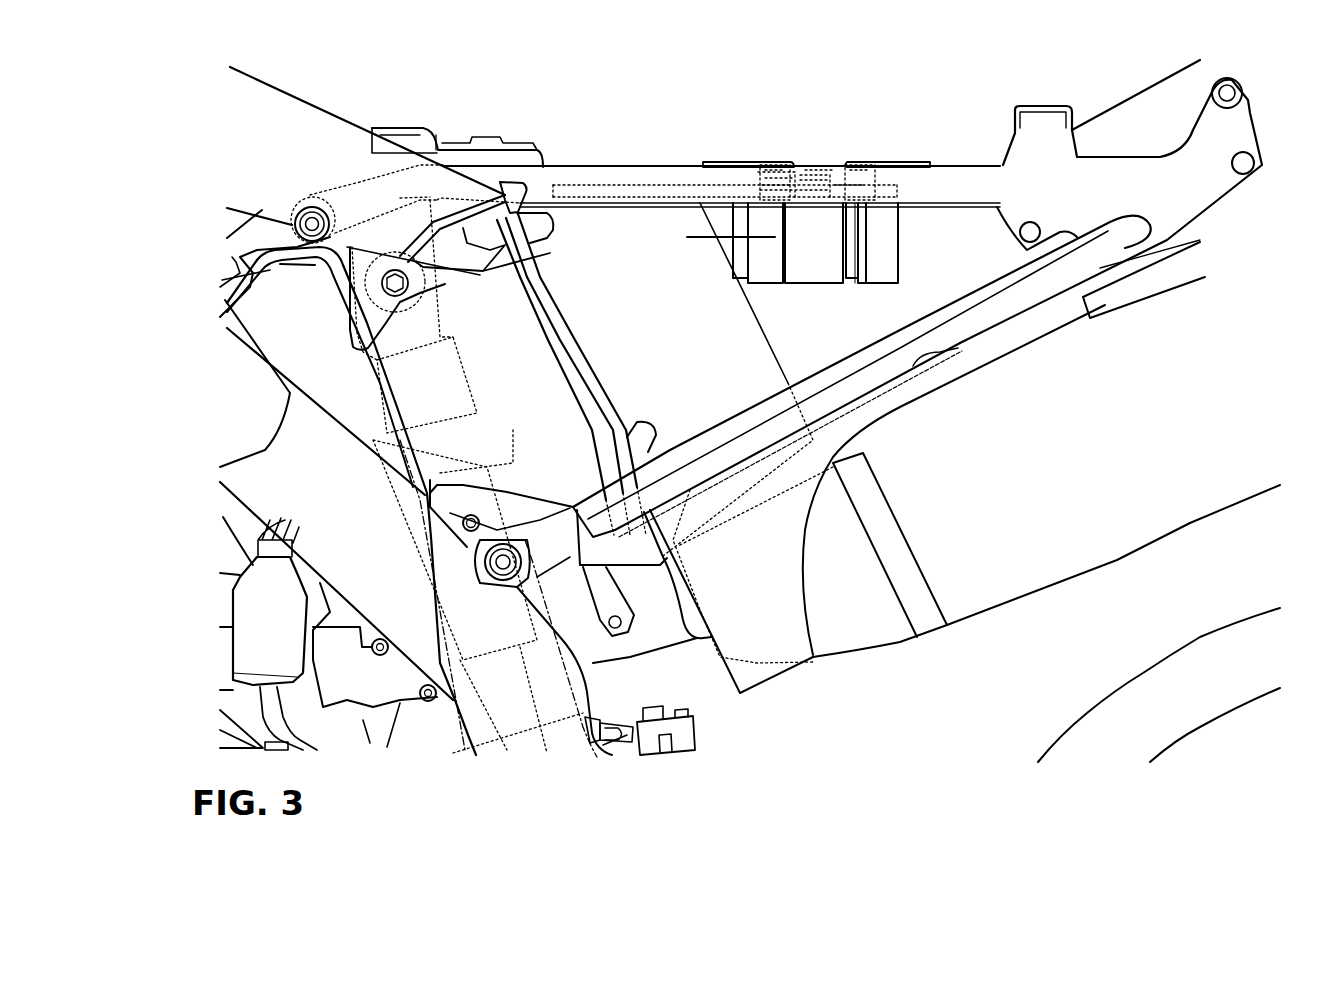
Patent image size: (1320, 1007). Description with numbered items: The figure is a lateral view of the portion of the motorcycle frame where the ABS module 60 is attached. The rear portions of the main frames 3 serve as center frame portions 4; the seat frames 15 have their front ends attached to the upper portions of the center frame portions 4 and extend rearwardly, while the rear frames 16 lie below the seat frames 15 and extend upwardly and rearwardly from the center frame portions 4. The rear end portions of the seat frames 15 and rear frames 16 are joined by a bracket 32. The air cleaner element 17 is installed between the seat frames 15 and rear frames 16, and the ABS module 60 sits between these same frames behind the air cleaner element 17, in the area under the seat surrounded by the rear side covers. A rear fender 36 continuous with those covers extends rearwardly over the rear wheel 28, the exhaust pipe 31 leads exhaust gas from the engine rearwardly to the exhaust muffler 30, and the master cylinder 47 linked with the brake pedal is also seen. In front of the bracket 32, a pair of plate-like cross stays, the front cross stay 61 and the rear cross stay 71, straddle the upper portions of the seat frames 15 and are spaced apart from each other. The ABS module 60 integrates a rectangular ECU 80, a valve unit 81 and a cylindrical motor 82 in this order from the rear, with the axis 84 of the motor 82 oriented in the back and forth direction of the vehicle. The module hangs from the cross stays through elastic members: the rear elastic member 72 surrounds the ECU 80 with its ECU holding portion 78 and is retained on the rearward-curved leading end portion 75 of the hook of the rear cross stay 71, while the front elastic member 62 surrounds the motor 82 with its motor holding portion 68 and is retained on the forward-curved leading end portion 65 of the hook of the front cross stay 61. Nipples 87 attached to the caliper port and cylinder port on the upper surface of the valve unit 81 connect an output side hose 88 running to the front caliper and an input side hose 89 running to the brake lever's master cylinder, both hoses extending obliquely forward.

The main frame 3 is at (265, 675).
The center frame portion 4 is at (328, 615).
The seat frame 15 is at (960, 173).
The rear frame 16 is at (867, 378).
The air cleaner element 17 is at (650, 343).
The rear wheel 28 is at (1140, 680).
The exhaust muffler 30 is at (1187, 520).
The exhaust pipe 31 is at (667, 633).
The bracket 32 is at (1143, 160).
The rear fender 36 is at (787, 575).
The master cylinder 47 is at (697, 725).
The ABS module 60 is at (820, 205).
The front cross stay 61 is at (740, 160).
The front elastic member 62 is at (773, 283).
The leading end portion 65 is at (773, 168).
The motor holding portion 68 is at (760, 283).
The rear cross stay 71 is at (900, 160).
The rear elastic member 72 is at (860, 283).
The leading end portion 75 is at (857, 167).
The ECU holding portion 78 is at (863, 242).
The ECU 80 is at (883, 263).
The valve unit 81 is at (827, 253).
The motor 82 is at (736, 278).
The axis 84 is at (697, 238).
The nipple 87 is at (800, 163).
The output side hose 88 is at (627, 185).
The input side hose 89 is at (725, 191).